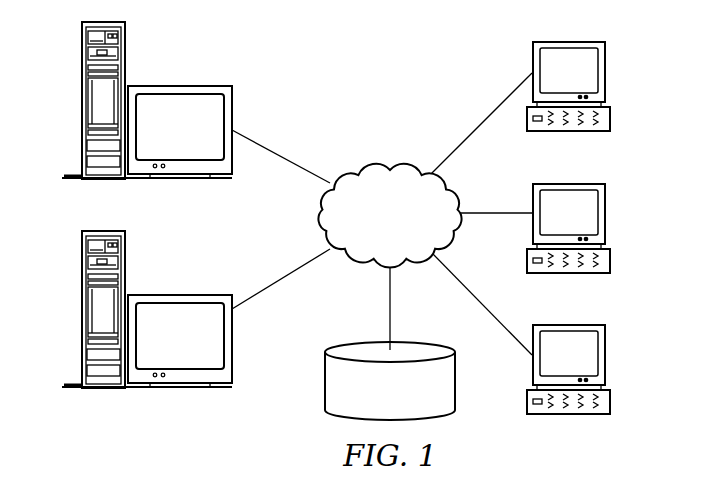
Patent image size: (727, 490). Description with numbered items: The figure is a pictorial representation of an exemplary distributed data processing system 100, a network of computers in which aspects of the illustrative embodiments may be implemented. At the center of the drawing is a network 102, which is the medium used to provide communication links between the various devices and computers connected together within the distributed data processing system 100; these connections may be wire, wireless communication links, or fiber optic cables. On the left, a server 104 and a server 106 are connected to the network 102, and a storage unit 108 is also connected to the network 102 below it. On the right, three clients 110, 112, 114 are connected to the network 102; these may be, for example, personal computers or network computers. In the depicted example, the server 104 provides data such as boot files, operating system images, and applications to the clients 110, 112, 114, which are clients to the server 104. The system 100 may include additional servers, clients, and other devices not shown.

The distributed data processing system 100 is at (441, 62).
The network 102 is at (362, 165).
The server 104 is at (82, 102).
The server 106 is at (82, 311).
The storage unit 108 is at (325, 392).
The client 110 is at (605, 70).
The client 112 is at (605, 213).
The client 114 is at (605, 355).